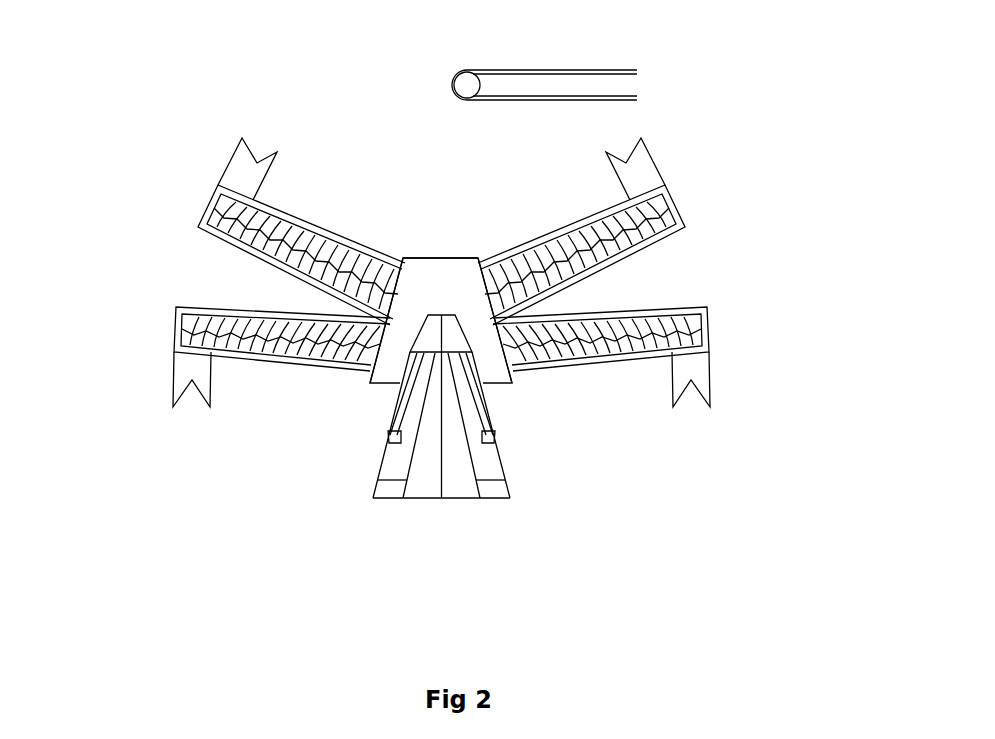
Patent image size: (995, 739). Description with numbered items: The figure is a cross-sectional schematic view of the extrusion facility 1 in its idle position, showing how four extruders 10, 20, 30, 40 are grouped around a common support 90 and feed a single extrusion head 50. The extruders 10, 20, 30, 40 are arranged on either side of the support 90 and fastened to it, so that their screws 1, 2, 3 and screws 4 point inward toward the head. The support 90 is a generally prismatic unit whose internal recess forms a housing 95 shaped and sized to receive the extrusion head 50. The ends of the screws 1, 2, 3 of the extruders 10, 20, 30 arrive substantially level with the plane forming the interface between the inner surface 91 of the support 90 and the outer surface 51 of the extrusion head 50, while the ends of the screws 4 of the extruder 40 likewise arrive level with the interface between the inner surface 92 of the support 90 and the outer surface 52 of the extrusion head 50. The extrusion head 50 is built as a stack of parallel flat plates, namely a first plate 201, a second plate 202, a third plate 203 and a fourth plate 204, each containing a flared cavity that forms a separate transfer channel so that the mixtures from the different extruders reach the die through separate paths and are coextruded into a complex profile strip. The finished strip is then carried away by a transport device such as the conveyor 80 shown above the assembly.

The screw 1 is at (232, 333).
The screw 2 is at (323, 257).
The screw 3 is at (668, 212).
The screws 4 is at (702, 325).
The extruder 10 is at (218, 325).
The extruder 20 is at (244, 212).
The extruder 30 is at (661, 231).
The extruder 40 is at (680, 319).
The extrusion head 50 is at (435, 474).
The outer surface 51 is at (388, 468).
The outer surface 52 is at (507, 463).
The conveyor 80 is at (632, 81).
The support 90 is at (444, 222).
The inner surface 91 is at (417, 270).
The inner surface 92 is at (492, 266).
The housing 95 is at (472, 287).
The first plate 201 is at (395, 497).
The second plate 202 is at (388, 437).
The third plate 203 is at (495, 437).
The fourth plate 204 is at (508, 500).